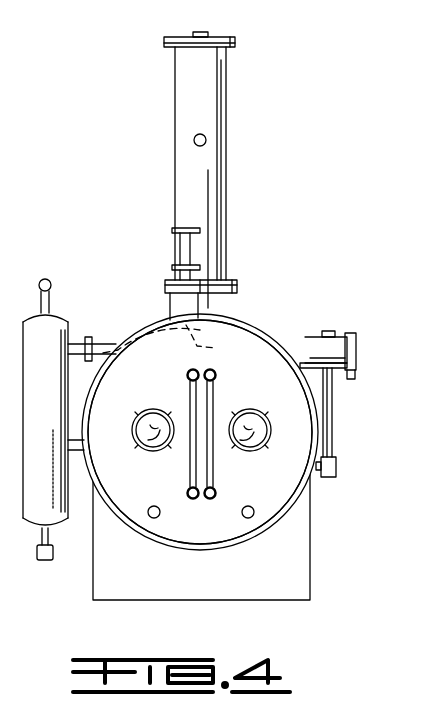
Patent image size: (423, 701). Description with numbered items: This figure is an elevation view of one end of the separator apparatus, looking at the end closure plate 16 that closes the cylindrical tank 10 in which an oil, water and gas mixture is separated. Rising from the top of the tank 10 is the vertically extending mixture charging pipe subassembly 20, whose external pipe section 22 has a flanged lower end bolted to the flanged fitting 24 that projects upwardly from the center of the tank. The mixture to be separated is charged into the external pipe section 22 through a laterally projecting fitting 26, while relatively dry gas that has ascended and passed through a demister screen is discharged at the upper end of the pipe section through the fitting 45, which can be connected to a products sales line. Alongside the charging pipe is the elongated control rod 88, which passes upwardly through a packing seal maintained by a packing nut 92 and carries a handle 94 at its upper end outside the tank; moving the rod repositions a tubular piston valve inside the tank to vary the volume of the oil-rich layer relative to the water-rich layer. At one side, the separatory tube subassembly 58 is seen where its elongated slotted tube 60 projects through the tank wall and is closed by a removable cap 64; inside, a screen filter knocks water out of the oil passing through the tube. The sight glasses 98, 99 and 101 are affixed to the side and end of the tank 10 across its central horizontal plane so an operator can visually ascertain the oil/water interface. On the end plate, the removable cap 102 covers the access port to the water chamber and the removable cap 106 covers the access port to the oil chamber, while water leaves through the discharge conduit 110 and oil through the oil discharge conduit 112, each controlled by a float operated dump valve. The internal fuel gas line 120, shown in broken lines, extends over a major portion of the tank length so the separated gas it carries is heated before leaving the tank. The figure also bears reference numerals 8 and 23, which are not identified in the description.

The separator vessel 8 is at (35, 405).
The tank 10 is at (140, 322).
The end closure plate 16 is at (168, 366).
The mixture charging pipe subassembly 20 is at (186, 140).
The external pipe section 22 is at (185, 172).
The flange 23 is at (233, 283).
The flanged fitting 24 is at (222, 305).
The laterally projecting fitting 26 is at (206, 137).
The fitting 45 is at (203, 32).
The separatory tube subassembly 58 is at (333, 370).
The tube 60 is at (318, 346).
The removable cap 64 is at (356, 357).
The control rod 88 is at (180, 247).
The packing nut 92 is at (175, 277).
The handle 94 is at (178, 228).
The sight glass 98 is at (332, 448).
The sight glass 99 is at (188, 496).
The sight glass 101 is at (213, 411).
The removable cap 102 is at (160, 442).
The removable cap 106 is at (245, 444).
The discharge conduit 110 is at (154, 520).
The oil discharge conduit 112 is at (249, 520).
The internal fuel gas line 120 is at (110, 348).